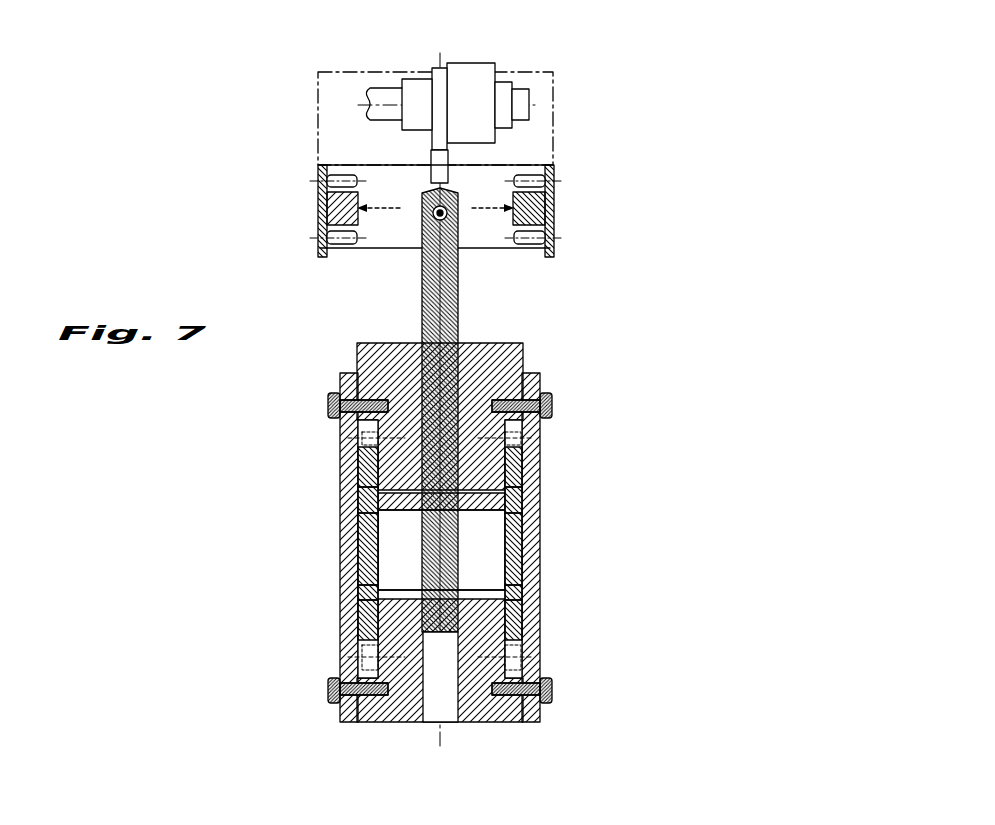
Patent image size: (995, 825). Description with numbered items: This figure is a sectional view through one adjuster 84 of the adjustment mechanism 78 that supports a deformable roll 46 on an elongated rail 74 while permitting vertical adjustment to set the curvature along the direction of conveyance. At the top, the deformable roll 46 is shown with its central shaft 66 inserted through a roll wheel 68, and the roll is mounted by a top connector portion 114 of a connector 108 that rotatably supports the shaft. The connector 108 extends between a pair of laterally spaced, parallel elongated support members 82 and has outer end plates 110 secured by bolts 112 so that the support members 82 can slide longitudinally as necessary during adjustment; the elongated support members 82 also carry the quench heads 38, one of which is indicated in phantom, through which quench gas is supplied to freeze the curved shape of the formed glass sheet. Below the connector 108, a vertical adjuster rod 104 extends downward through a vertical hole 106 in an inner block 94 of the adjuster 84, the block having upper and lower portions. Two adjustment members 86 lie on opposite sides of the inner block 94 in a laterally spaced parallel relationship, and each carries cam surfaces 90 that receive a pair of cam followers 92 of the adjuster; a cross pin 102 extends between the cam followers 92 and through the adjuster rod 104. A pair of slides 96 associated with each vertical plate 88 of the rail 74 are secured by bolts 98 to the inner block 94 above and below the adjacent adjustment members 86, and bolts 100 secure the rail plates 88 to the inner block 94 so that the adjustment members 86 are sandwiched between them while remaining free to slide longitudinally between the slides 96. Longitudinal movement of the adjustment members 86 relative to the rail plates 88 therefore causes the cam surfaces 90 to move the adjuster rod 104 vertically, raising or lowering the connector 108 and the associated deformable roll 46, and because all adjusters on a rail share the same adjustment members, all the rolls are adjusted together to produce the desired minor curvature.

The quench head 38 is at (553, 125).
The lower deformable roll 46 is at (520, 52).
The central shaft 66 is at (598, 55).
The roll wheel 68 is at (473, 62).
The elongated rail 74 is at (336, 517).
The adjustment mechanism 78 is at (586, 353).
The elongated support member 82 is at (318, 203).
The adjuster 84 is at (421, 293).
The adjustment member 86 is at (375, 600).
The vertical plate 88 is at (340, 470).
The cam surface 90 is at (340, 525).
The cam follower 92 is at (340, 495).
The inner block 94 is at (352, 356).
The slide 96 is at (340, 453).
The bolt 98 is at (340, 432).
The bolt 100 is at (328, 405).
The cross pin 102 is at (397, 515).
The vertical adjuster rod 104 is at (425, 302).
The vertical hole 106 is at (449, 378).
The connector 108 is at (393, 177).
The outer end plate 110 is at (318, 220).
The bolt 112 is at (318, 175).
The top connector portion 114 is at (452, 150).